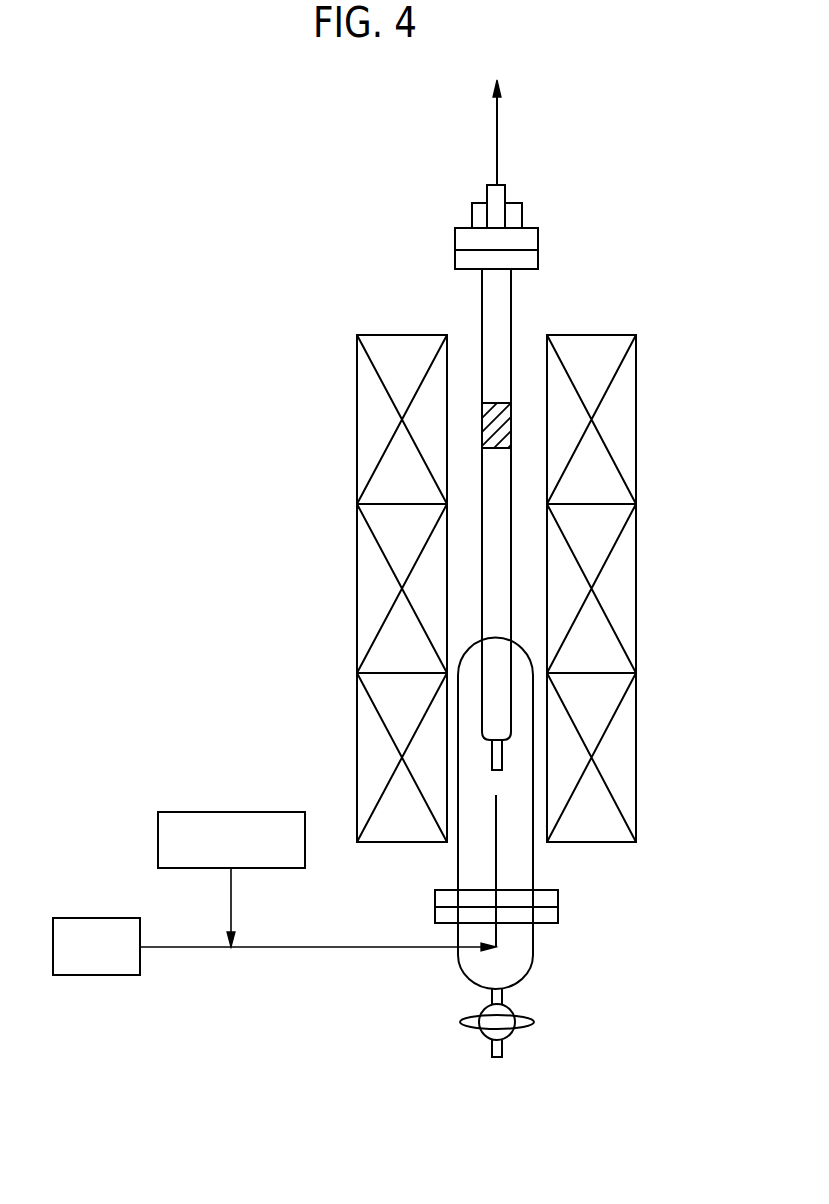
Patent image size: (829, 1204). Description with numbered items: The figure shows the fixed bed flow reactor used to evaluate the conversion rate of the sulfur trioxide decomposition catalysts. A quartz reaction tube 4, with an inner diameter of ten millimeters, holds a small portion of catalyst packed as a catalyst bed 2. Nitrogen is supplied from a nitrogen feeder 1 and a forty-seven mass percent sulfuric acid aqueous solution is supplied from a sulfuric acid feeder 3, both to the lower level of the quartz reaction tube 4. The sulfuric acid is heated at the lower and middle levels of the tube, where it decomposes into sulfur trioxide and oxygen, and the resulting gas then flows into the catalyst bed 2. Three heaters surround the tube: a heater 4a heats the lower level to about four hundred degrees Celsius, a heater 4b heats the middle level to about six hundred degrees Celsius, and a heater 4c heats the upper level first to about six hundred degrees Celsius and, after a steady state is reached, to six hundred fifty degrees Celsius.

The nitrogen feeder 1 is at (100, 975).
The catalyst bed 2 is at (505, 427).
The sulfuric acid feeder 3 is at (267, 812).
The quartz reaction tube 4 is at (384, 259).
The heater 4a is at (620, 763).
The heater 4b is at (620, 591).
The heater 4c is at (620, 423).